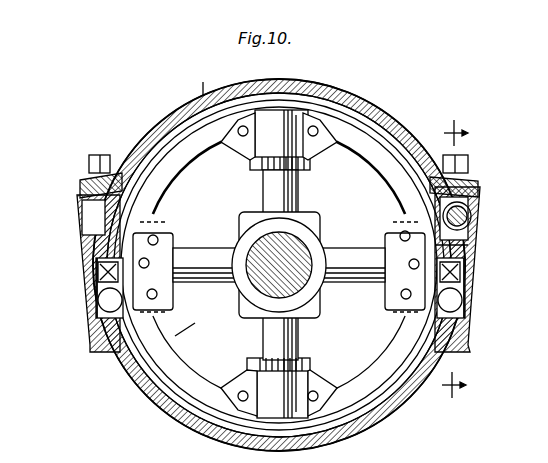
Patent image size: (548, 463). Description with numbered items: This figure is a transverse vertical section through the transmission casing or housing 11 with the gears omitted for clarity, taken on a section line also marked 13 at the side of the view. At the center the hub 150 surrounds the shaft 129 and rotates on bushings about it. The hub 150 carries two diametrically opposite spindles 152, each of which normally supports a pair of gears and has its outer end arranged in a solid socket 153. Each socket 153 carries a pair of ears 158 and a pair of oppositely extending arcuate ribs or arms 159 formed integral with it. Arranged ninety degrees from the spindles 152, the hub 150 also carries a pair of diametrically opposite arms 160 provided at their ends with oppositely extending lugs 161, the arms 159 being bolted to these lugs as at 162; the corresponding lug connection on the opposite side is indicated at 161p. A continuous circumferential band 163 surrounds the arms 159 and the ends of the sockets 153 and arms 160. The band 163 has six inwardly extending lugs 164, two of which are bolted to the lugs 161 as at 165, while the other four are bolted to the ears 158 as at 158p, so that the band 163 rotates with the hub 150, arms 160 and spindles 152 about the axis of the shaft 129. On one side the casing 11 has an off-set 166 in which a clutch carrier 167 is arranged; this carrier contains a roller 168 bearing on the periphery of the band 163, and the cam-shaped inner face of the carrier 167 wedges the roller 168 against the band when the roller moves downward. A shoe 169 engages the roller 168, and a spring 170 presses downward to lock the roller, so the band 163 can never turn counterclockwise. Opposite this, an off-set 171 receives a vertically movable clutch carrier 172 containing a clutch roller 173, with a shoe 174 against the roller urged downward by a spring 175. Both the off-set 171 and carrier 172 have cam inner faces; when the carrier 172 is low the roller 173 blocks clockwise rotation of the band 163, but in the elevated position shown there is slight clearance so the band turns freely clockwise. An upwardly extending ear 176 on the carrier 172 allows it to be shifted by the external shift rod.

The housing 11 is at (386, 402).
The section line 13 is at (329, 242).
The shaft 129 is at (306, 248).
The hub 150 is at (242, 285).
The spindle 152 is at (292, 195).
The socket 153 is at (282, 123).
The ear 158 is at (331, 126).
The bolt 158p is at (243, 138).
The arcuate rib or arm 159 is at (171, 171).
The arm 160 is at (199, 252).
The lug 161 is at (400, 218).
The slot 161p is at (392, 318).
The bolt 162 is at (162, 230).
The band 163 is at (189, 323).
The lug 164 is at (178, 284).
The bolt 165 is at (408, 262).
The off-set 166 is at (91, 330).
The clutch carrier 167 is at (90, 314).
The roller 168 is at (108, 300).
The shoe 169 is at (97, 282).
The spring 170 is at (92, 262).
The off-set 171 is at (475, 332).
The clutch carrier 172 is at (470, 282).
The clutch roller 173 is at (452, 300).
The shoe 174 is at (474, 264).
The spring 175 is at (485, 246).
The ear 176 is at (482, 213).